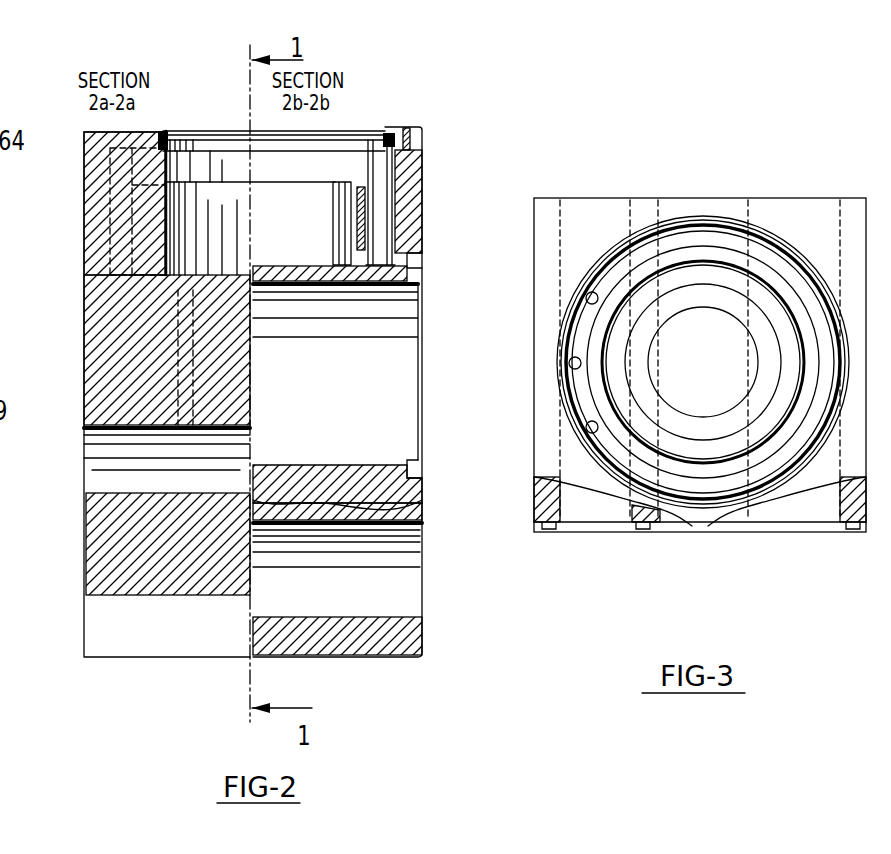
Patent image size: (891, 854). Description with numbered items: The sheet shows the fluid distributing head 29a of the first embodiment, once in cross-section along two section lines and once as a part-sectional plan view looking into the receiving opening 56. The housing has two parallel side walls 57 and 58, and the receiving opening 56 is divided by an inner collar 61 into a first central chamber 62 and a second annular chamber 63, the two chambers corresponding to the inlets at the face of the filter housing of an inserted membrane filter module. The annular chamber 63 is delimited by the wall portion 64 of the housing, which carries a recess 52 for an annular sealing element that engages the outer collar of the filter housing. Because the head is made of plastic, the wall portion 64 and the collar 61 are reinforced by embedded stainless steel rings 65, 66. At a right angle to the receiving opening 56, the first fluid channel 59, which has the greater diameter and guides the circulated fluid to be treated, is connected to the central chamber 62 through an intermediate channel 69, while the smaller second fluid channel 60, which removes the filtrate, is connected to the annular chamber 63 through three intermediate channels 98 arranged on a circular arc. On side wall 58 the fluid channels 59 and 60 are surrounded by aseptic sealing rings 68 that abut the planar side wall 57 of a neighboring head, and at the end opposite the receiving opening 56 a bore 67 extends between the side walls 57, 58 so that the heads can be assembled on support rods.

In FIG. 2, the fluid distributing head 29a is at (172, 62).
In FIG. 3, the fluid distributing head 29a is at (579, 170).
In FIG. 2, the recess 52 is at (165, 142).
In FIG. 2, the receiving opening 56 is at (387, 130).
In FIG. 3, the receiving opening 56 is at (724, 235).
In FIG. 2, the side wall 57 is at (86, 392).
In FIG. 3, the side wall 57 is at (792, 188).
In FIG. 2, the side wall 58 is at (422, 228).
In FIG. 3, the side wall 58 is at (777, 530).
In FIG. 2, the first fluid channel 59 is at (382, 432).
In FIG. 3, the first fluid channel 59 is at (830, 520).
In FIG. 2, the second fluid channel 60 is at (117, 463).
In FIG. 3, the second fluid channel 60 is at (563, 508).
In FIG. 2, the collar 61 is at (343, 197).
In FIG. 3, the collar 61 is at (668, 255).
In FIG. 2, the first central chamber 62 is at (392, 173).
In FIG. 3, the first central chamber 62 is at (690, 272).
In FIG. 2, the second annular chamber 63 is at (377, 212).
In FIG. 3, the second annular chamber 63 is at (617, 266).
In FIG. 2, the wall portion 64 is at (100, 185).
In FIG. 2, the stainless steel ring 65 is at (362, 238).
In FIG. 2, the stainless steel ring 66 is at (413, 137).
In FIG. 3, the stainless steel ring 66 is at (556, 342).
In FIG. 2, the bore 67 is at (403, 588).
In FIG. 2, the aseptic sealing rings 68 is at (412, 262).
In FIG. 3, the aseptic sealing rings 68 is at (645, 524).
In FIG. 2, the intermediate channel 69 is at (323, 285).
In FIG. 2, the intermediate channels 98 is at (245, 318).
In FIG. 3, the intermediate channels 98 is at (586, 297).